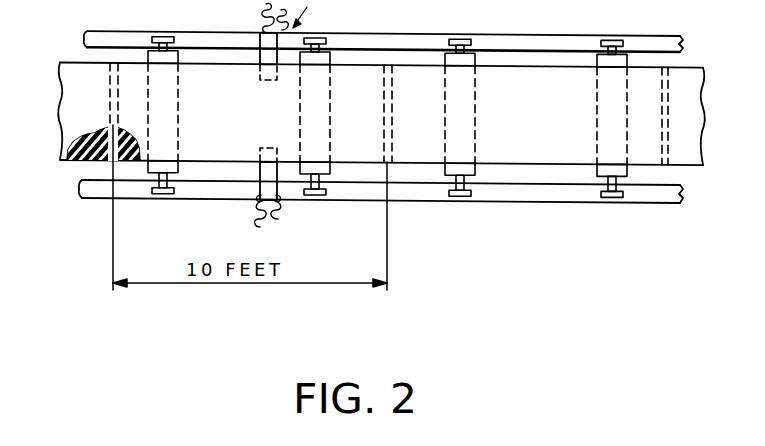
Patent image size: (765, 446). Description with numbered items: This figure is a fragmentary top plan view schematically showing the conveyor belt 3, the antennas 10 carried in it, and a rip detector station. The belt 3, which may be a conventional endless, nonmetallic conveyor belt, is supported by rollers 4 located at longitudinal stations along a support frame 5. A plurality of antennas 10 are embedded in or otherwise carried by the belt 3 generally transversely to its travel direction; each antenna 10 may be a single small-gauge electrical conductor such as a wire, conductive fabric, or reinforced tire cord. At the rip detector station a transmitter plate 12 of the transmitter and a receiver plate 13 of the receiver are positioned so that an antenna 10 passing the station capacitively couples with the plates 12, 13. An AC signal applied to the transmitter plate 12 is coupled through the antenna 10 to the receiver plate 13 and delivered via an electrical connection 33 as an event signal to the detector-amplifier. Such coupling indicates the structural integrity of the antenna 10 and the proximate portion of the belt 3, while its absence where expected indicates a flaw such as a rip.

The conveyor belt 3 is at (417, 150).
The rollers 4 is at (178, 56).
The support frame 5 is at (92, 200).
The antennas 10 is at (392, 82).
The transmitter plate 12 is at (260, 33).
The receiver plate 13 is at (278, 187).
The electrical connection 33 is at (257, 227).